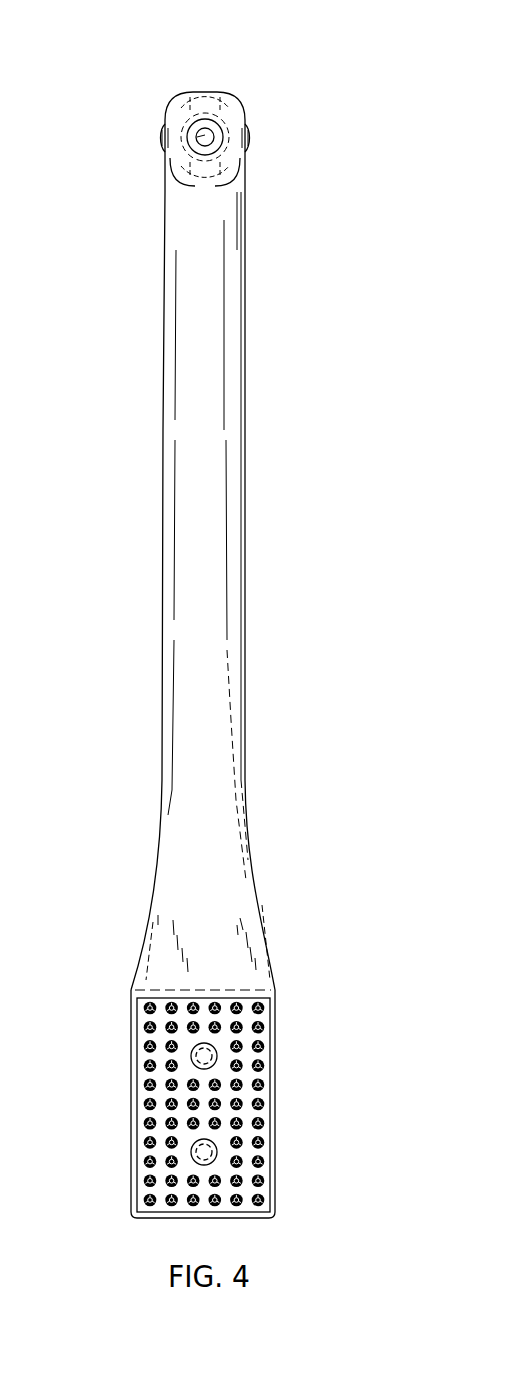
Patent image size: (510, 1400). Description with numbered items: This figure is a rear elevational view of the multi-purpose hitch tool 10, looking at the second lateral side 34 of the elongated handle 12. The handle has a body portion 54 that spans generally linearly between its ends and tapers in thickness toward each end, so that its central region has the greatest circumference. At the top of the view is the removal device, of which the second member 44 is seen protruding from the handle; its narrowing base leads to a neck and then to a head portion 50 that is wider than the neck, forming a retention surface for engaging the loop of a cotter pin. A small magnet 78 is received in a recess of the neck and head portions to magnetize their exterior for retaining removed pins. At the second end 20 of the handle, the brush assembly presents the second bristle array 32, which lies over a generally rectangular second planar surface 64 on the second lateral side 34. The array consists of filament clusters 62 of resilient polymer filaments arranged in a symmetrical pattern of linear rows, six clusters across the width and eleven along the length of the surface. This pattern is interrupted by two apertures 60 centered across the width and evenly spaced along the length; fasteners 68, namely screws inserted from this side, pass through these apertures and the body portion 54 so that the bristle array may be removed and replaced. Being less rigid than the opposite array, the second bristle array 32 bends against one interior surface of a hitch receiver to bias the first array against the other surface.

The multi-purpose hitch tool 10 is at (137, 68).
The elongated handle 12 is at (262, 377).
The second end 20 is at (290, 991).
The second bristle array 32 is at (137, 1214).
The second lateral side 34 is at (210, 967).
The second member 44 is at (216, 99).
The head portion 50 is at (212, 138).
The body portion 54 is at (205, 580).
The apertures 60 is at (213, 1061).
The filament clusters 62 is at (148, 1125).
The second planar surface 64 is at (250, 1021).
The fasteners 68 is at (191, 1051).
The magnet 78 is at (163, 146).